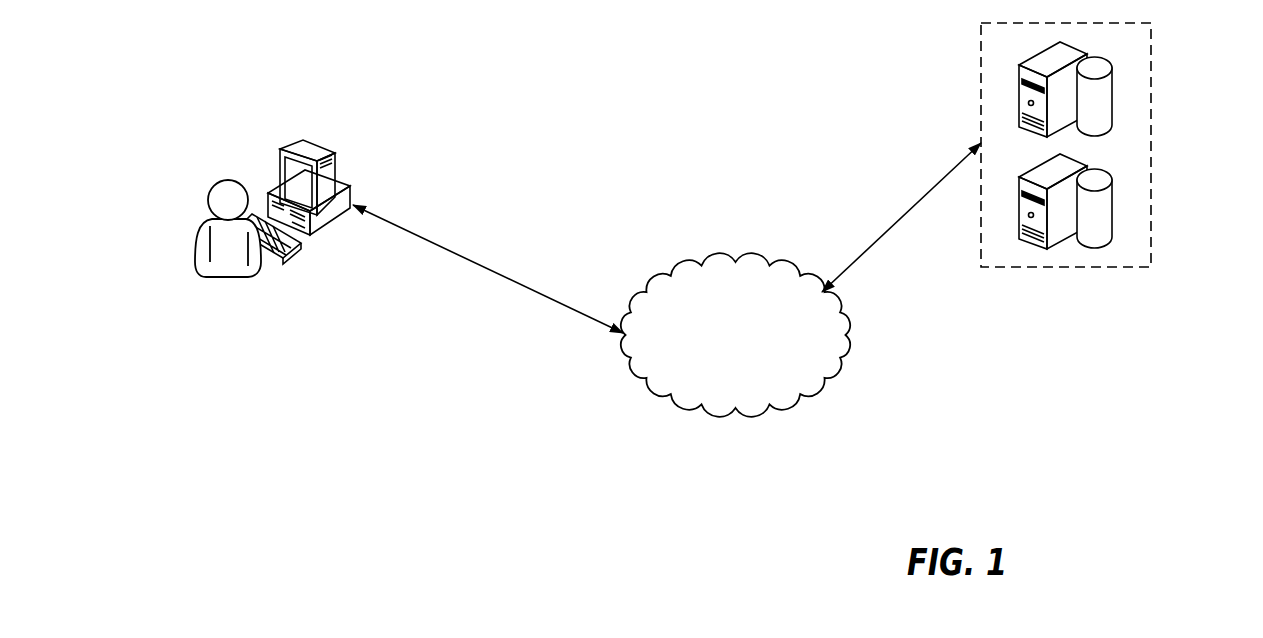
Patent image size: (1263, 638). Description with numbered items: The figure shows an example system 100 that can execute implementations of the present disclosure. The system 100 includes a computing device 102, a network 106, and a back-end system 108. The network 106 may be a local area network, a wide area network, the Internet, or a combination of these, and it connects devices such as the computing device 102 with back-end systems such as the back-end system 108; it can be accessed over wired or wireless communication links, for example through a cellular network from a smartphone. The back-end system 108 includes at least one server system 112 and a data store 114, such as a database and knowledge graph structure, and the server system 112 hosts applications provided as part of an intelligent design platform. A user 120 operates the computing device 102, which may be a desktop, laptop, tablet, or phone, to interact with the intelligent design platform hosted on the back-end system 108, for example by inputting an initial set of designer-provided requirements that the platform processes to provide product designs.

The system 100 is at (554, 80).
The computing device 102 is at (277, 152).
The user 120 is at (208, 193).
The network 106 is at (752, 260).
The back-end system 108 is at (1151, 143).
The server system 112 is at (1019, 80).
The data store 114 is at (1112, 98).